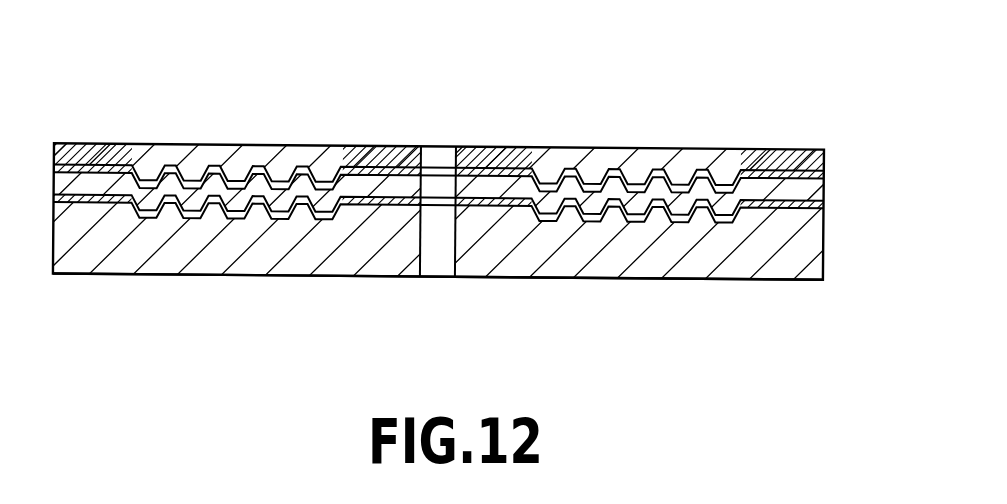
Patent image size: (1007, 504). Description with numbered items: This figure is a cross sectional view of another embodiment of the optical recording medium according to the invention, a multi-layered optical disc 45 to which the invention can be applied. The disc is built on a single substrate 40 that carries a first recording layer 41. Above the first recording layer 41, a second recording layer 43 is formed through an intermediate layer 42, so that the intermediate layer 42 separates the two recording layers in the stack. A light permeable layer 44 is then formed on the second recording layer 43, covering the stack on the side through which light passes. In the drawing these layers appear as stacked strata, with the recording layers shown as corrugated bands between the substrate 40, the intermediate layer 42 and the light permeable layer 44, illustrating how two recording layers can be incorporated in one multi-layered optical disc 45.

The substrate 40 is at (812, 268).
The first recording layer 41 is at (740, 221).
The intermediate layer 42 is at (813, 191).
The second recording layer 43 is at (824, 170).
The light permeable layer 44 is at (577, 153).
The multi-layered optical disc 45 is at (718, 125).